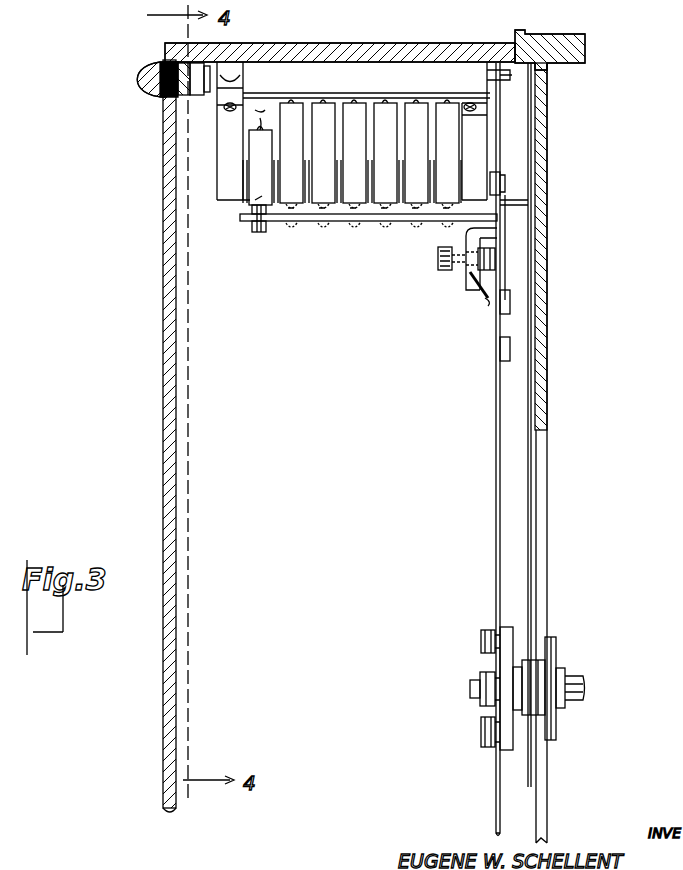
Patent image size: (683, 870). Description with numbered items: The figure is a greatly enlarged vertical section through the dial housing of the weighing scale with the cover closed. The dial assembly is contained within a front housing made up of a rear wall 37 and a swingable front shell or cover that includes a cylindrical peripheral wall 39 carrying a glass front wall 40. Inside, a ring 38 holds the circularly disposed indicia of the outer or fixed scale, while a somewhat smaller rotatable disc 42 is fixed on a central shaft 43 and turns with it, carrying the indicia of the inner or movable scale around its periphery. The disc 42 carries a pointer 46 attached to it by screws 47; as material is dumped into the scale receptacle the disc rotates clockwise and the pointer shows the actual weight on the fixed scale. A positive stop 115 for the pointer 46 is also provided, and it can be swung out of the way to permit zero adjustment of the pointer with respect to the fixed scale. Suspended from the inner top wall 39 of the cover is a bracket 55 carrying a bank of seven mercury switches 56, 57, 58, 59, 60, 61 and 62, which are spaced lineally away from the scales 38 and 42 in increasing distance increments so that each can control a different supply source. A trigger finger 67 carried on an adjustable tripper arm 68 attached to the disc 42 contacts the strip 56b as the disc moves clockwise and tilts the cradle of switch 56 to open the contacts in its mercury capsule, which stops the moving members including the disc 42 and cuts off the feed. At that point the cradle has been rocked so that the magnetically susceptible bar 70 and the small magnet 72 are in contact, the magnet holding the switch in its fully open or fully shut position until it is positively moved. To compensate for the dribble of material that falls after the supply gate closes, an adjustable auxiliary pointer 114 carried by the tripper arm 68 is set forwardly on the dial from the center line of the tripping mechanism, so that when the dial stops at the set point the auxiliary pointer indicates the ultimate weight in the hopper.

The rear wall 37 is at (548, 372).
The ring 38 is at (528, 122).
The cylindrical peripheral wall 39 is at (372, 43).
The glass front wall 40 is at (163, 303).
The rotatable disc 42 is at (496, 503).
The central shaft 43 is at (588, 677).
The pointer 46 is at (512, 204).
The screws 47 is at (498, 349).
The bracket 55 is at (224, 166).
The switch 56 is at (260, 166).
The strip 56b is at (258, 203).
The switch 57 is at (291, 151).
The switch 58 is at (323, 151).
The switch 59 is at (354, 151).
The switch 60 is at (385, 151).
The switch 61 is at (416, 151).
The switch 62 is at (447, 151).
The trigger finger 67 is at (254, 222).
The adjustable tripper arm 68 is at (312, 221).
The magnetically susceptible bar 70 is at (278, 104).
The magnet 72 is at (254, 114).
The adjustable auxiliary pointer 114 is at (488, 302).
The positive stop 115 is at (503, 172).